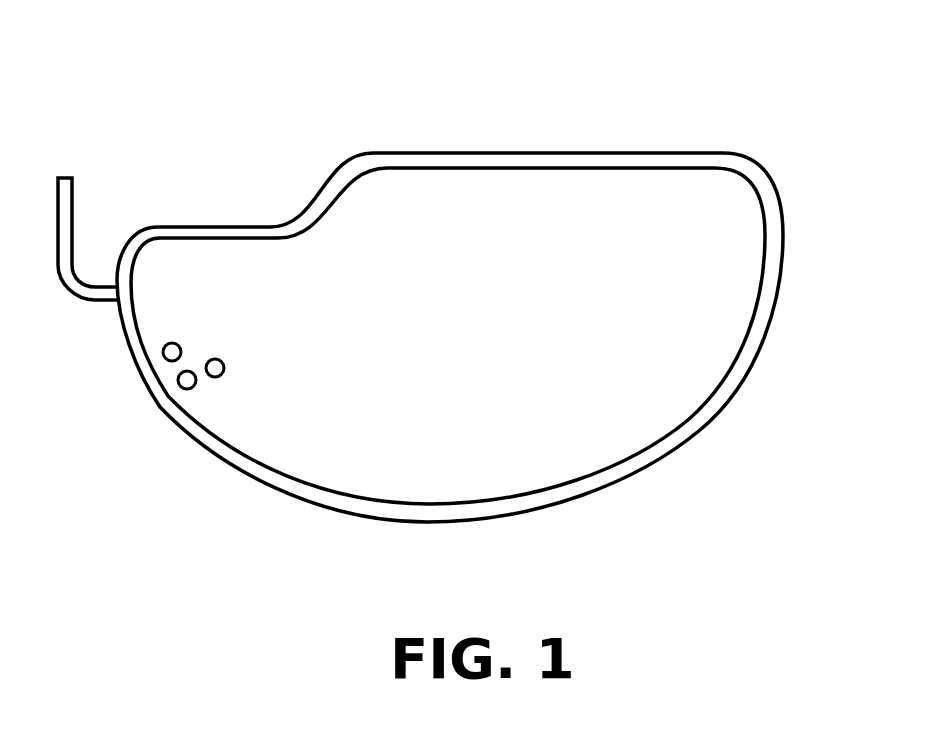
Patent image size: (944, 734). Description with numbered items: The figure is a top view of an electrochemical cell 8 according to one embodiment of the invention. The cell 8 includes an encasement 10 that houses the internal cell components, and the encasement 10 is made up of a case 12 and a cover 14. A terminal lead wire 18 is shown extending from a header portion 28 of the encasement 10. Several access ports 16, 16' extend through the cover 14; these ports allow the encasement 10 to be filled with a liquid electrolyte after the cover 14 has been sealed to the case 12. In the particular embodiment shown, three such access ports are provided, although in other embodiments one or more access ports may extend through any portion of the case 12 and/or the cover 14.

The cell 8 is at (493, 37).
The encasement 10 is at (578, 132).
The case 12 is at (783, 237).
The cover 14 is at (693, 348).
The access port 16 is at (154, 422).
The access port 16' is at (129, 389).
The terminal lead wire 18 is at (72, 211).
The header portion 28 is at (167, 302).